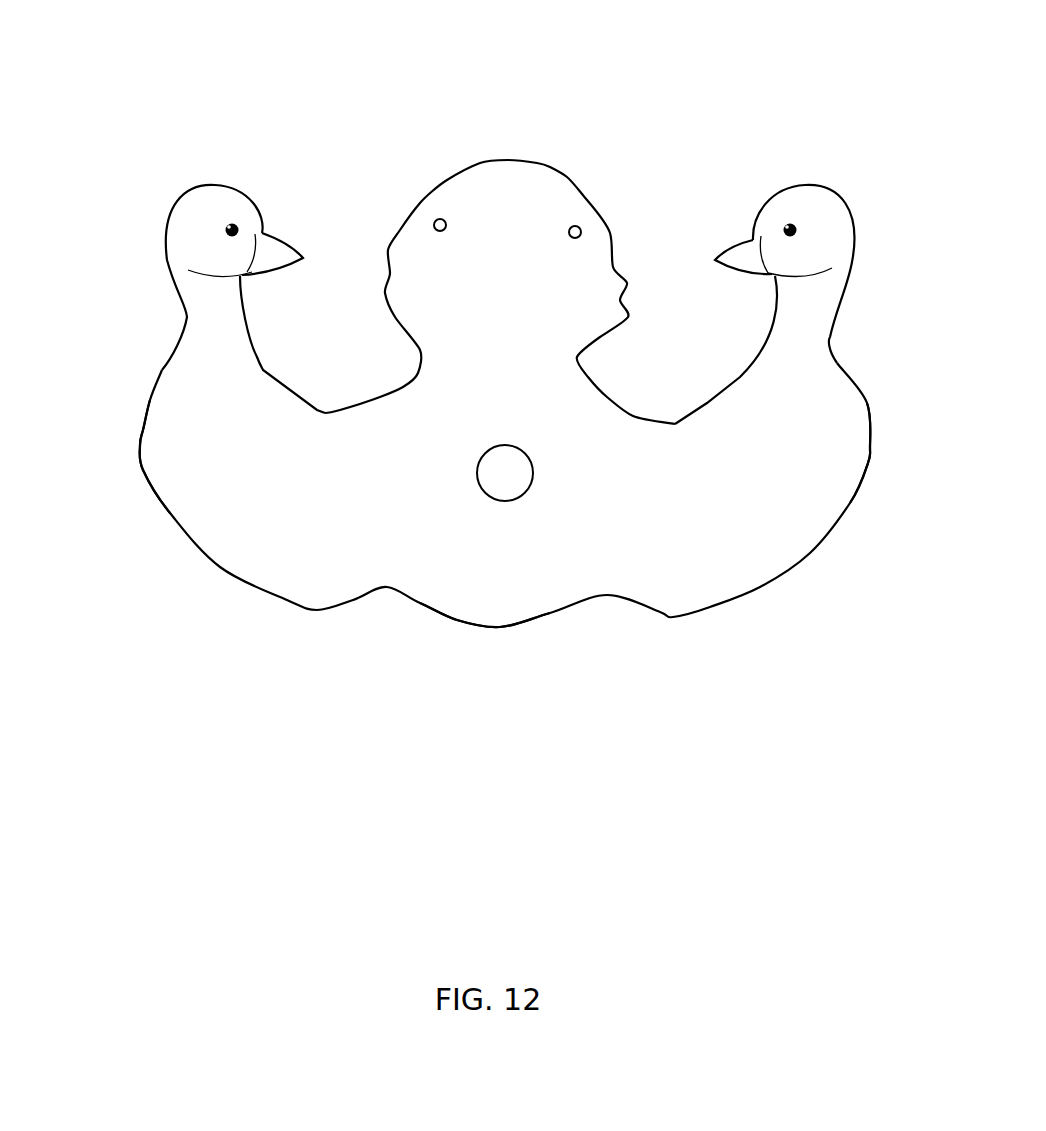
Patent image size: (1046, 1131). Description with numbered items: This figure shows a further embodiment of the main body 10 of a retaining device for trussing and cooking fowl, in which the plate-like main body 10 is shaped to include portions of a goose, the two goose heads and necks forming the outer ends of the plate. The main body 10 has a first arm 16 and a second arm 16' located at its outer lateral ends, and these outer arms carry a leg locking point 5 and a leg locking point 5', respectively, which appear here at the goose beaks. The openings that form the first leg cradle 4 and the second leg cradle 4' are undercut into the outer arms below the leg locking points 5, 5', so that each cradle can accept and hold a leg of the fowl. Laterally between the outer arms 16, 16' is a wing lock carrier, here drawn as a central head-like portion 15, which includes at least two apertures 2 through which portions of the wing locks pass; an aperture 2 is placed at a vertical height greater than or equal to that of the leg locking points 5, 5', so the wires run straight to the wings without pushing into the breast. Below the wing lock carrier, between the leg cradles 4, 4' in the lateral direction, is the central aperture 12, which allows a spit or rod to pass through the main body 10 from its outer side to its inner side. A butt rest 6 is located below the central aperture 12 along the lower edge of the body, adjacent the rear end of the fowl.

The wing lock carrier aperture 2 is at (568, 213).
The first leg cradle 4 is at (764, 452).
The second leg cradle 4' is at (193, 400).
The leg locking point 5 is at (296, 163).
The leg locking point 5' is at (717, 164).
The butt rest 6 is at (457, 635).
The main body 10 is at (190, 597).
The central aperture 12 is at (512, 487).
The central head portion 15 is at (504, 161).
The first arm 16 is at (105, 456).
The second arm 16' is at (908, 453).